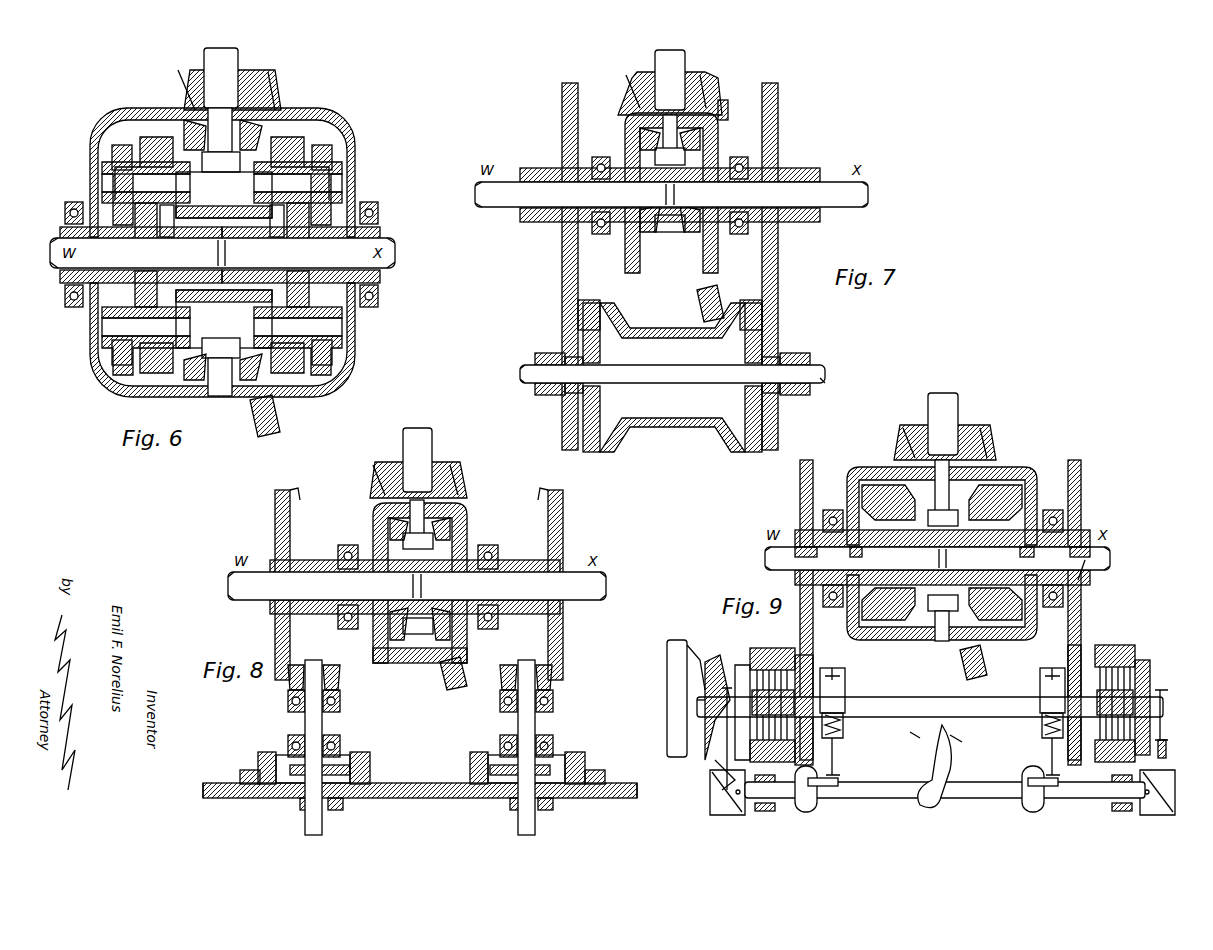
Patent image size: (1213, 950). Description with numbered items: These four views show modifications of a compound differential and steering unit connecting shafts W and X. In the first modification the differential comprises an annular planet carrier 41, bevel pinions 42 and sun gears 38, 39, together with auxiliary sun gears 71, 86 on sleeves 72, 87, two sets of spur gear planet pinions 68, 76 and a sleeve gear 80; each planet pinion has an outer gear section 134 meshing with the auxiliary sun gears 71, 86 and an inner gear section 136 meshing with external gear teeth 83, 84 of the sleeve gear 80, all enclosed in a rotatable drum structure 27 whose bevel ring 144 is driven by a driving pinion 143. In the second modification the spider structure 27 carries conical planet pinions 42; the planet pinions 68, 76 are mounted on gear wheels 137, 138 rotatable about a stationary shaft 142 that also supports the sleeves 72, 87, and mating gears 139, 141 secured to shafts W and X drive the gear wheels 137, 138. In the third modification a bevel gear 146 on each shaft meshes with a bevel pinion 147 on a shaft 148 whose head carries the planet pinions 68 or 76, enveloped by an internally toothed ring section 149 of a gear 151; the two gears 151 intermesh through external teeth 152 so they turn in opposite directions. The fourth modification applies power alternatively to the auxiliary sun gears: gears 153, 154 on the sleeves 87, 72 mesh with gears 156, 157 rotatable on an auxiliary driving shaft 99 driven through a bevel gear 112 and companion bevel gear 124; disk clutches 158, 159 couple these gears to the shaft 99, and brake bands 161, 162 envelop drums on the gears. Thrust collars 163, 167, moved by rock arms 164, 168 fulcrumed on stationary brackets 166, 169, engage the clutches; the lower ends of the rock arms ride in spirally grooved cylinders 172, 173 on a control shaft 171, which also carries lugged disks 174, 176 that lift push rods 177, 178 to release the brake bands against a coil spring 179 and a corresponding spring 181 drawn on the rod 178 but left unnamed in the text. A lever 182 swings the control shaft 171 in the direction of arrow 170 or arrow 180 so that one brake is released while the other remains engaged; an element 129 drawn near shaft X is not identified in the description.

In FIG. 6, the rotatable drum structure 27 is at (160, 106).
In FIG. 7, the rotatable drum structure 27 is at (650, 268).
In FIG. 8, the rotatable drum structure 27 is at (400, 663).
In FIG. 9, the rotatable drum structure 27 is at (878, 467).
In FIG. 6, the sun gear 38 is at (163, 140).
In FIG. 7, the sun gear 38 is at (640, 140).
In FIG. 8, the sun gear 38 is at (388, 530).
In FIG. 9, the sun gear 38 is at (862, 490).
In FIG. 6, the sun gear 39 is at (290, 144).
In FIG. 7, the sun gear 39 is at (705, 146).
In FIG. 8, the sun gear 39 is at (455, 533).
In FIG. 9, the sun gear 39 is at (1022, 490).
In FIG. 6, the annular planet carrier 41 is at (222, 170).
In FIG. 6, the bevel pinions 42 is at (247, 130).
In FIG. 7, the bevel pinions 42 is at (655, 128).
In FIG. 8, the bevel pinions 42 is at (400, 520).
In FIG. 9, the bevel pinions 42 is at (925, 640).
In FIG. 6, the planet pinions 68 is at (102, 162).
In FIG. 7, the planet pinions 68 is at (600, 392).
In FIG. 8, the planet pinions 68 is at (262, 752).
In FIG. 6, the auxiliary sun gear 71 is at (130, 234).
In FIG. 7, the auxiliary sun gear 71 is at (600, 360).
In FIG. 8, the auxiliary sun gear 71 is at (335, 765).
In FIG. 9, the auxiliary sun gear 71 is at (876, 543).
In FIG. 6, the sleeve 72 is at (65, 208).
In FIG. 7, the sleeve 72 is at (556, 353).
In FIG. 8, the sleeve 72 is at (322, 812).
In FIG. 9, the sleeve 72 is at (828, 544).
In FIG. 6, the planet pinions 76 is at (342, 162).
In FIG. 7, the planet pinions 76 is at (745, 392).
In FIG. 8, the planet pinions 76 is at (582, 762).
In FIG. 6, the sleeve gear 80 is at (222, 333).
In FIG. 7, the sleeve gear 80 is at (660, 418).
In FIG. 6, the external gear teeth 83 is at (160, 226).
In FIG. 6, the external gear teeth 84 is at (280, 226).
In FIG. 6, the auxiliary sun gear 86 is at (322, 234).
In FIG. 7, the auxiliary sun gear 86 is at (745, 358).
In FIG. 8, the auxiliary sun gear 86 is at (545, 765).
In FIG. 9, the auxiliary sun gear 86 is at (1012, 543).
In FIG. 6, the sleeve 87 is at (378, 208).
In FIG. 7, the sleeve 87 is at (800, 355).
In FIG. 8, the sleeve 87 is at (535, 812).
In FIG. 9, the sleeve 87 is at (1058, 543).
In FIG. 9, the auxiliary driving shaft 99 is at (926, 697).
In FIG. 9, the bevel gear 112 is at (700, 660).
In FIG. 9, the companion bevel gear 124 is at (668, 716).
In FIG. 9, the shaft end 129 is at (1080, 570).
In FIG. 6, the outer gear section 134 is at (124, 145).
In FIG. 6, the inner gear section 136 is at (195, 208).
In FIG. 7, the gear wheel 137 is at (578, 312).
In FIG. 7, the gear wheel 138 is at (762, 312).
In FIG. 7, the mating gear 139 is at (562, 258).
In FIG. 7, the mating gear 141 is at (778, 255).
In FIG. 7, the stationary shaft 142 is at (822, 380).
In FIG. 6, the driving pinion 143 is at (188, 80).
In FIG. 7, the driving pinion 143 is at (632, 75).
In FIG. 8, the driving pinion 143 is at (384, 463).
In FIG. 9, the driving pinion 143 is at (920, 428).
In FIG. 6, the bevel ring gear 144 is at (250, 427).
In FIG. 7, the bevel ring gear 144 is at (700, 305).
In FIG. 8, the bevel ring gear 144 is at (450, 690).
In FIG. 9, the bevel ring gear 144 is at (967, 660).
In FIG. 8, the bevel gear 146 is at (275, 630).
In FIG. 8, the bevel pinion 147 is at (330, 665).
In FIG. 8, the shaft 148 is at (300, 712).
In FIG. 8, the internally toothed ring section 149 is at (245, 770).
In FIG. 8, the gear 151 is at (262, 798).
In FIG. 8, the external teeth 152 is at (205, 800).
In FIG. 9, the gear 153 is at (1081, 488).
In FIG. 9, the gear 154 is at (800, 500).
In FIG. 9, the gear 156 is at (1068, 652).
In FIG. 9, the gear 157 is at (812, 665).
In FIG. 9, the disk clutch 158 is at (1125, 645).
In FIG. 9, the disk clutch 159 is at (770, 648).
In FIG. 9, the brake band 161 is at (1040, 668).
In FIG. 9, the brake band 162 is at (845, 670).
In FIG. 9, the thrust collar 163 is at (1150, 675).
In FIG. 9, the rock arm 164 is at (1172, 715).
In FIG. 9, the stationary bracket 166 is at (1166, 752).
In FIG. 9, the thrust collar 167 is at (738, 670).
In FIG. 9, the rock arm 168 is at (722, 745).
In FIG. 9, the stationary bracket 169 is at (712, 778).
In FIG. 9, the arrow 170 is at (967, 730).
In FIG. 9, the control shaft 171 is at (958, 798).
In FIG. 9, the spirally grooved cylinder 172 is at (1150, 812).
In FIG. 9, the spirally grooved cylinder 173 is at (718, 822).
In FIG. 9, the disk 174 is at (1040, 810).
In FIG. 9, the disk 176 is at (814, 810).
In FIG. 9, the push rod 177 is at (1052, 768).
In FIG. 9, the push rod 178 is at (833, 760).
In FIG. 9, the coil spring 179 is at (1042, 733).
In FIG. 9, the arrow 180 is at (918, 726).
In FIG. 9, the spring 181 is at (843, 733).
In FIG. 9, the lever 182 is at (932, 760).